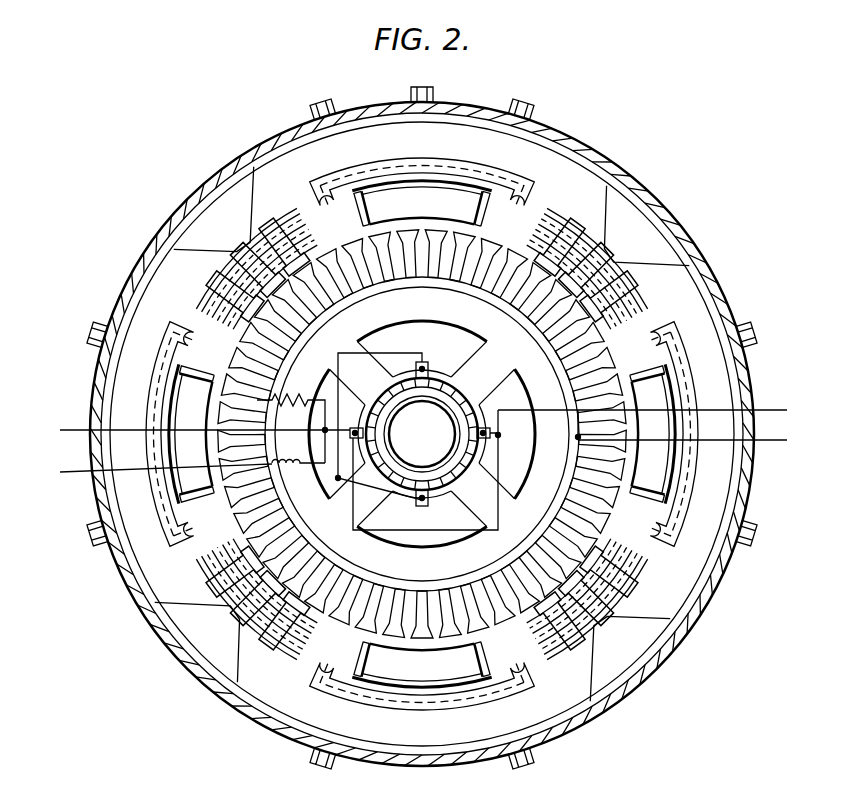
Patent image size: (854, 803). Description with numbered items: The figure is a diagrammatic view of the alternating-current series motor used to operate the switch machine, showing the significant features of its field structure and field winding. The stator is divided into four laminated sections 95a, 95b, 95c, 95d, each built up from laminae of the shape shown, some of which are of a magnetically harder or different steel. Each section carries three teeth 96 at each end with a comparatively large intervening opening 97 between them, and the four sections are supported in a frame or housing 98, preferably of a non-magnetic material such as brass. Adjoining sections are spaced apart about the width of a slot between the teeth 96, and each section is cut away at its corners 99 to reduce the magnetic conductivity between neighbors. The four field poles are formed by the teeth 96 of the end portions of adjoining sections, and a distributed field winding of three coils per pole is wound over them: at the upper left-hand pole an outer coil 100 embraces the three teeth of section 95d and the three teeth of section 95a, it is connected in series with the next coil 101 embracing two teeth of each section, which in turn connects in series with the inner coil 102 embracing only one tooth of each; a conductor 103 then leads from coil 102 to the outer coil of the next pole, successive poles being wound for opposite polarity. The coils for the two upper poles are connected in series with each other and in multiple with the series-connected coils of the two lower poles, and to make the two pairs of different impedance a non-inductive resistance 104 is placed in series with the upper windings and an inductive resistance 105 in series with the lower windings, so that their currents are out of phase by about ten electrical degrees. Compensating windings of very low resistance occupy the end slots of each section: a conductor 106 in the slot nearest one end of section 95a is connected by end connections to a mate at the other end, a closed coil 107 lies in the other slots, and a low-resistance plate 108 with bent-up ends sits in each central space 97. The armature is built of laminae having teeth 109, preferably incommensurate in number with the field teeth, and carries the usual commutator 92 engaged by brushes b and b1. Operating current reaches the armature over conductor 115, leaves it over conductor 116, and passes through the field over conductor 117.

The commutator 92 is at (427, 430).
The stator section 95a is at (422, 109).
The stator section 95b is at (749, 434).
The stator section 95c is at (422, 763).
The stator section 95d is at (104, 449).
The teeth 96 is at (422, 433).
The intervening opening 97 is at (422, 434).
The frame or housing 98 is at (240, 210).
The cut-away corners 99 is at (422, 434).
The outer coil 100 is at (407, 428).
The next coil 101 is at (445, 404).
The inner coil 102 is at (422, 425).
The conductor 103 is at (422, 431).
The non-inductive resistance 104 is at (292, 396).
The inductive resistance 105 is at (290, 468).
The conductor 106 is at (421, 423).
The closed coil 107 is at (422, 393).
The plate 108 is at (421, 433).
The armature teeth 109 is at (421, 433).
The conductor 115 is at (90, 470).
The conductor 116 is at (782, 405).
The conductor 117 is at (62, 428).
The brush b is at (428, 370).
The brush b1 is at (356, 430).